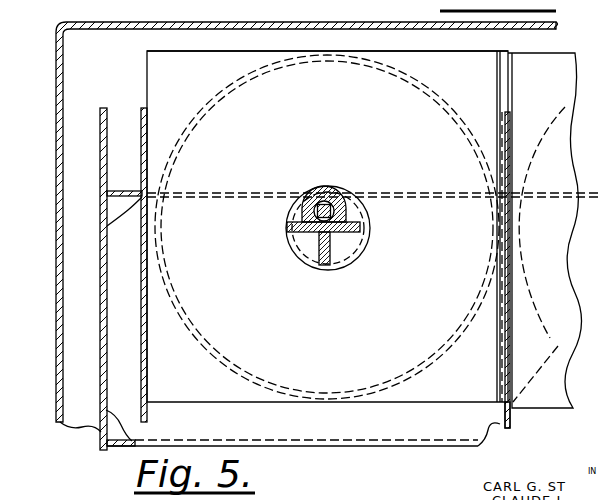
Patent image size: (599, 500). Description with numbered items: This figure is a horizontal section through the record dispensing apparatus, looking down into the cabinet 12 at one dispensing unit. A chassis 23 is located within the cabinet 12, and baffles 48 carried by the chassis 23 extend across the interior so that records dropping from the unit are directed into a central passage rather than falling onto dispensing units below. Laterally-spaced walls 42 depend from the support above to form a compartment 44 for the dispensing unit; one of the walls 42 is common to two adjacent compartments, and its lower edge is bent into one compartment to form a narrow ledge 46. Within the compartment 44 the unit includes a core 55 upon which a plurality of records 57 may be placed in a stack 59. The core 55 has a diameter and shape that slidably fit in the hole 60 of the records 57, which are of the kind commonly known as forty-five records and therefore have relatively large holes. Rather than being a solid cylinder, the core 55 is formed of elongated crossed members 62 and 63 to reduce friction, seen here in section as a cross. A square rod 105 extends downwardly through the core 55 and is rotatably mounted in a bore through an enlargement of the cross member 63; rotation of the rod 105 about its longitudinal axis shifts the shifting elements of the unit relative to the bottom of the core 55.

The cabinet 12 is at (56, 63).
The chassis 23 is at (96, 327).
The walls 42 is at (144, 112).
The compartment 44 is at (196, 96).
The ledge 46 is at (499, 428).
The baffles 48 is at (344, 434).
The core 55 is at (360, 236).
The records 57 is at (270, 57).
The stack 59 is at (148, 44).
The hole 60 is at (345, 253).
The crossed member 62 is at (302, 237).
The cross member 63 is at (313, 256).
The square rod 105 is at (319, 196).